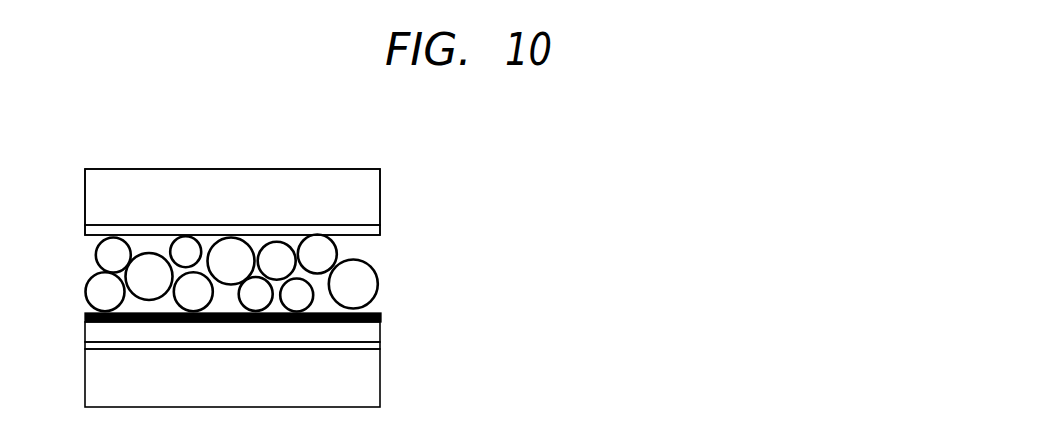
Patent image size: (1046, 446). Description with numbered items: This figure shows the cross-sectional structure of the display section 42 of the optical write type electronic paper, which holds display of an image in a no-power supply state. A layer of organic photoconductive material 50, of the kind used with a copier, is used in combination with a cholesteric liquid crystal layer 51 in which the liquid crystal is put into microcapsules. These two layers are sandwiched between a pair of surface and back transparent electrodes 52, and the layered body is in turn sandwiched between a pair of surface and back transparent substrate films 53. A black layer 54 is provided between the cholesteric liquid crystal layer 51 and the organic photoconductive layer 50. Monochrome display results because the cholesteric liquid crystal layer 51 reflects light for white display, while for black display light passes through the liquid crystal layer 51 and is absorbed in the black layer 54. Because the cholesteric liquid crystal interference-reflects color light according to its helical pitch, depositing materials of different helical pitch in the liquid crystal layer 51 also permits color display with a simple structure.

The display section 42 is at (307, 169).
The organic photoconductive layer 50 is at (287, 331).
The cholesteric liquid crystal layer 51 is at (220, 262).
The transparent electrode 52 is at (333, 228).
The transparent substrate film 53 is at (280, 191).
The black layer 54 is at (380, 316).